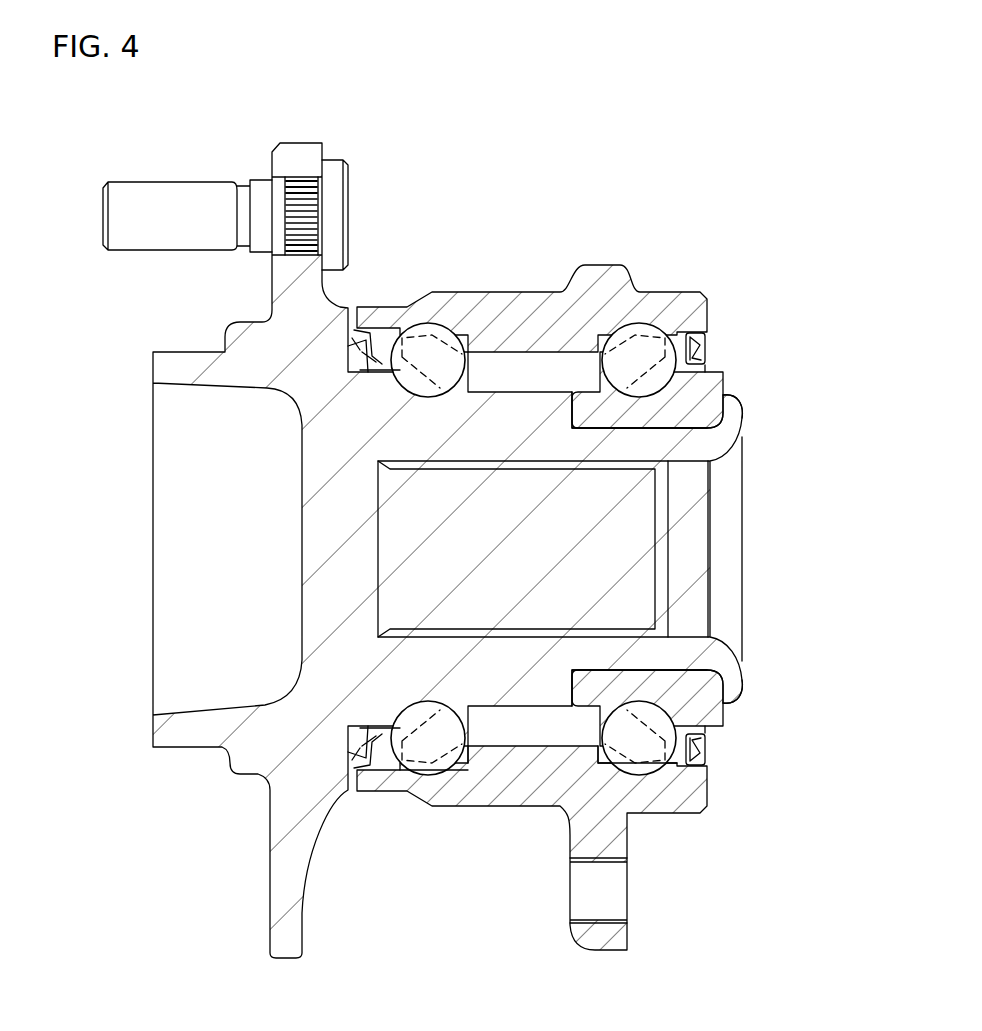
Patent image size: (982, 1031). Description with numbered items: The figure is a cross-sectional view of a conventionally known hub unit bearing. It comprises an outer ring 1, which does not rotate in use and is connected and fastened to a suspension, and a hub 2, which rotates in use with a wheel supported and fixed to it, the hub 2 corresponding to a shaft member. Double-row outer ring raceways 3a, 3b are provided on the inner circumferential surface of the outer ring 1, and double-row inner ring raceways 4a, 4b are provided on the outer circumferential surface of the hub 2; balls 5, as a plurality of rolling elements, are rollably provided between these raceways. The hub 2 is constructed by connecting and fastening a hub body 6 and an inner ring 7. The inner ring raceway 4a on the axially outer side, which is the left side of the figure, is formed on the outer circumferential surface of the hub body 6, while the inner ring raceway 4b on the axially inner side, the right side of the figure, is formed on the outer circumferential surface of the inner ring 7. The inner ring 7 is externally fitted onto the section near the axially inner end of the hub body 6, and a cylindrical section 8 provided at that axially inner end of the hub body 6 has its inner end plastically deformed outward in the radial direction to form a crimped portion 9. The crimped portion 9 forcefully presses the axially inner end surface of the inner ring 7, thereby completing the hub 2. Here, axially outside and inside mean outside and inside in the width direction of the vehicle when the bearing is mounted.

The outer ring 1 is at (606, 238).
The hub 2 is at (141, 361).
The outer ring raceway 3a is at (442, 745).
The outer ring raceway 3b is at (627, 762).
The inner ring raceway 4a is at (428, 702).
The inner ring raceway 4b is at (633, 702).
The balls 5 is at (620, 337).
The hub body 6 is at (317, 363).
The inner ring 7 is at (690, 398).
The cylindrical section 8 is at (688, 458).
The crimped portion 9 is at (730, 407).